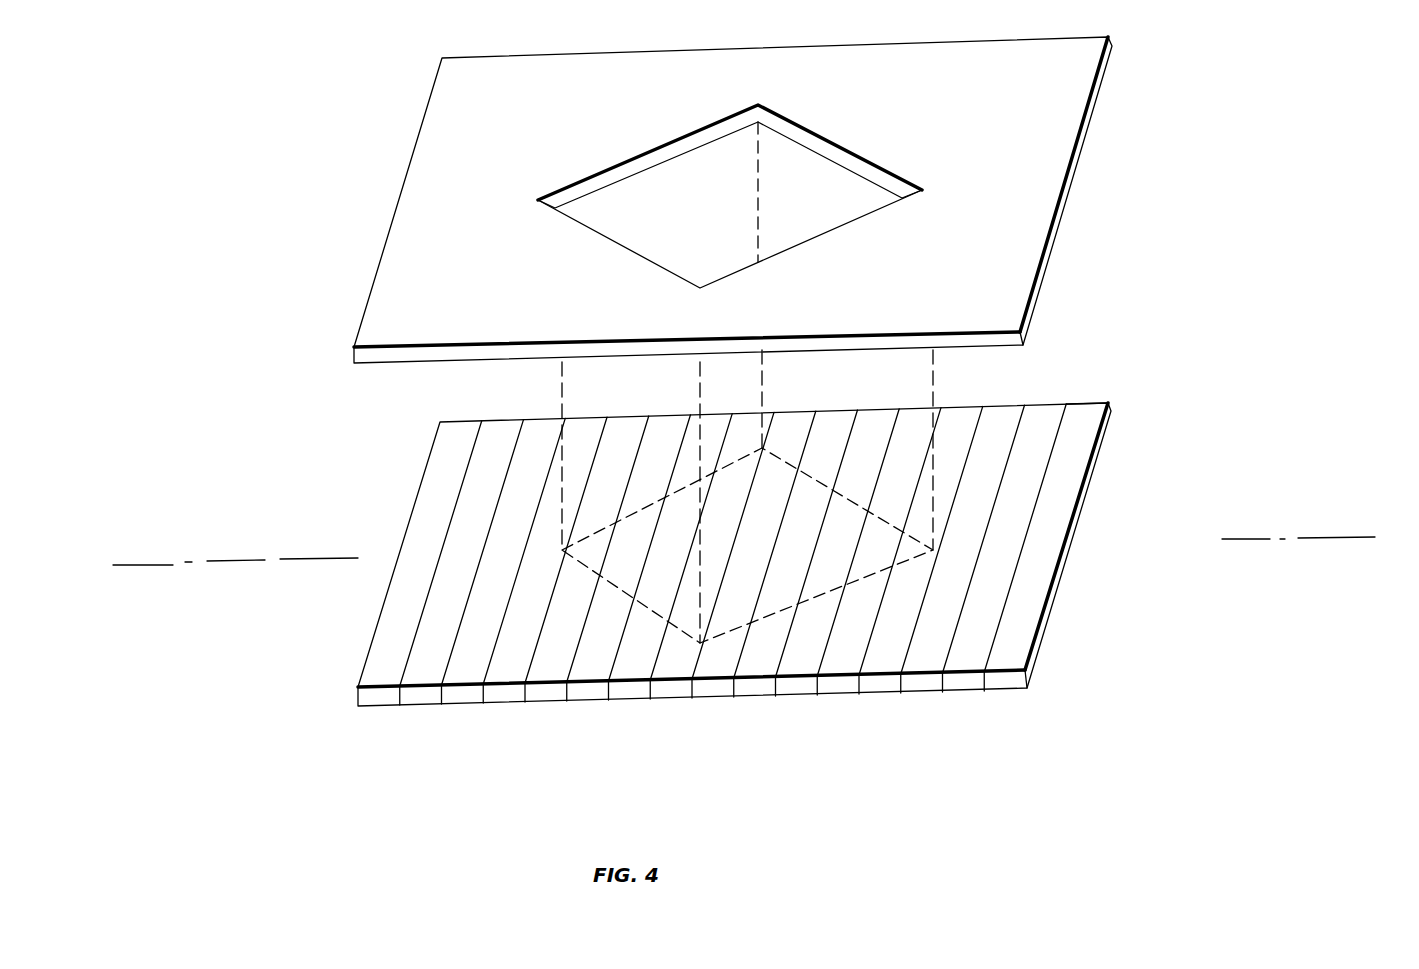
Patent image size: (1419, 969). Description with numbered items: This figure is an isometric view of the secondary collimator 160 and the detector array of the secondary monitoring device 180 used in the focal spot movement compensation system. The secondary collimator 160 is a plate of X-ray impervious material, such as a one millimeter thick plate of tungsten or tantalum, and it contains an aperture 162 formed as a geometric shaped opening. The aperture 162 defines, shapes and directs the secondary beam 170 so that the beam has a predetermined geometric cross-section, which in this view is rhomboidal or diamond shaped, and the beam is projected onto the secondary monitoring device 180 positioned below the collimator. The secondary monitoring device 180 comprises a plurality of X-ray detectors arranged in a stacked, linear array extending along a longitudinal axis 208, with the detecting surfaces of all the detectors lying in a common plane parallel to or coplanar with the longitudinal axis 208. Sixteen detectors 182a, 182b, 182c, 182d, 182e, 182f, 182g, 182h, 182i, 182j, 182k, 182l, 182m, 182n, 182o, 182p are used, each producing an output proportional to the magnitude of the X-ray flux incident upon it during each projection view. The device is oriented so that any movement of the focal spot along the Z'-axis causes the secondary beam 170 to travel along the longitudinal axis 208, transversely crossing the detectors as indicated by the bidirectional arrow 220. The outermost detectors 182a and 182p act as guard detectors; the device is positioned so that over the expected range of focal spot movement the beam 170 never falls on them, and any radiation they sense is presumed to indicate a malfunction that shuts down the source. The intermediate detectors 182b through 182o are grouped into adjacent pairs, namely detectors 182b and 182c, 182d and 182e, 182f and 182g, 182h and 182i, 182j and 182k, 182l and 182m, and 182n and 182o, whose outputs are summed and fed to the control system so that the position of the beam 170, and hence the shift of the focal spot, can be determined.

The secondary collimator 160 is at (1060, 222).
The aperture 162 is at (655, 195).
The secondary beam 170 is at (612, 525).
The secondary monitoring device 180 is at (1092, 403).
The detector 182a is at (394, 650).
The detector 182b is at (413, 676).
The detector 182c is at (460, 671).
The detector 182d is at (517, 660).
The detector 182e is at (561, 665).
The detector 182f is at (602, 654).
The detector 182g is at (643, 656).
The detector 182h is at (685, 660).
The detector 182i is at (722, 662).
The detector 182j is at (763, 655).
The detector 182k is at (812, 653).
The detector 182l is at (853, 647).
The detector 182m is at (883, 648).
The detector 182n is at (940, 598).
The detector 182o is at (992, 562).
The detector 182p is at (1055, 523).
The longitudinal axis 208 is at (1322, 538).
The bidirectional arrow 220 is at (324, 557).